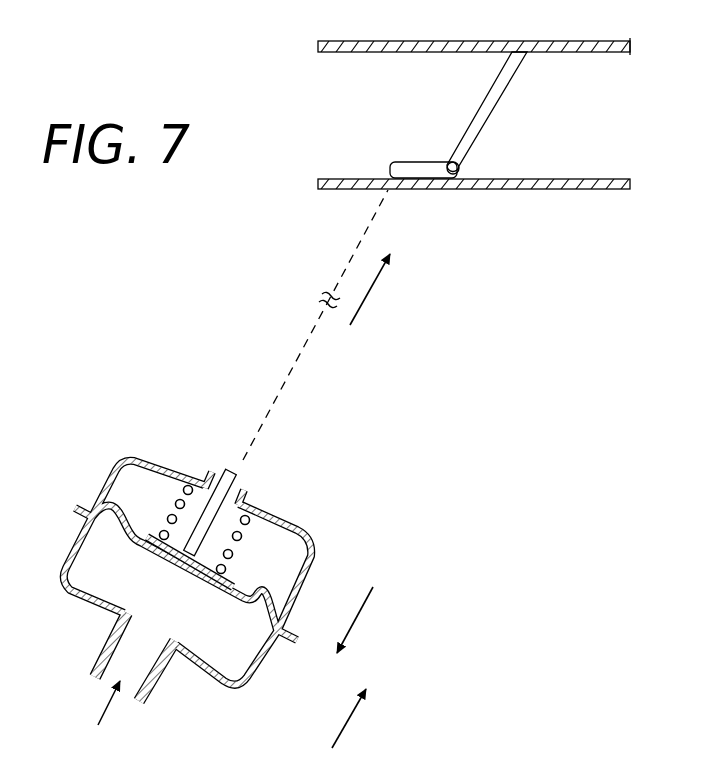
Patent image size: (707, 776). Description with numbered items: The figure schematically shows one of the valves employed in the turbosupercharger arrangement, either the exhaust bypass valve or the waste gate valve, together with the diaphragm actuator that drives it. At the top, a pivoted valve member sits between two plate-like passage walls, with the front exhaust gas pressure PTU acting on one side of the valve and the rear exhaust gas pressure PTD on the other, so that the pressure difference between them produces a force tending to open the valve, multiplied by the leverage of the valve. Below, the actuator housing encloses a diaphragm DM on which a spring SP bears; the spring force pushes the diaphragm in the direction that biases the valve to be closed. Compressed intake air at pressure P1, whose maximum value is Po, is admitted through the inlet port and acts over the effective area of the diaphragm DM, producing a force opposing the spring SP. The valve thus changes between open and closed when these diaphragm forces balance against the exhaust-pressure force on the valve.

The front exhaust gas pressure PTU is at (474, 82).
The rear exhaust gas pressure PTD is at (593, 80).
The spring SP is at (241, 540).
The diaphragm DM is at (192, 560).
The maximum value of air pressure P1 Po is at (101, 714).